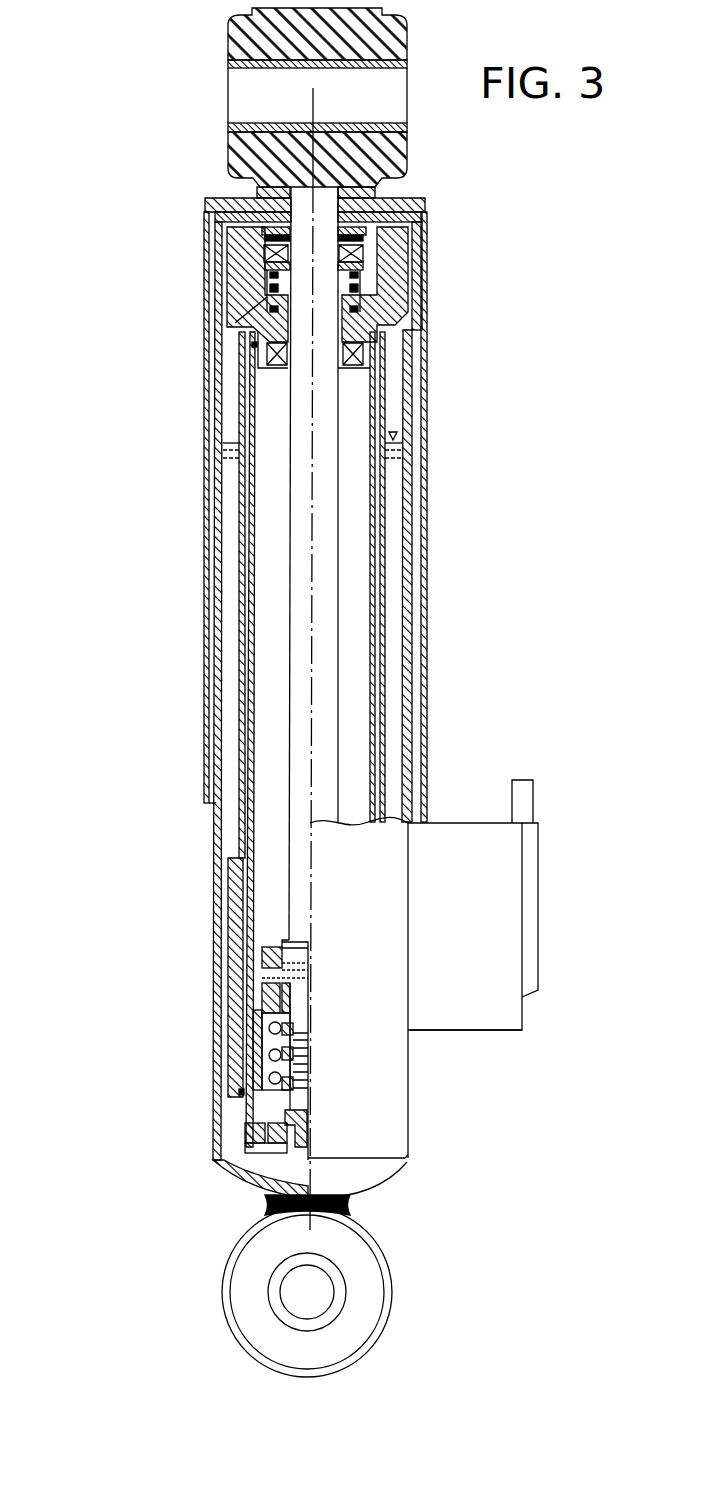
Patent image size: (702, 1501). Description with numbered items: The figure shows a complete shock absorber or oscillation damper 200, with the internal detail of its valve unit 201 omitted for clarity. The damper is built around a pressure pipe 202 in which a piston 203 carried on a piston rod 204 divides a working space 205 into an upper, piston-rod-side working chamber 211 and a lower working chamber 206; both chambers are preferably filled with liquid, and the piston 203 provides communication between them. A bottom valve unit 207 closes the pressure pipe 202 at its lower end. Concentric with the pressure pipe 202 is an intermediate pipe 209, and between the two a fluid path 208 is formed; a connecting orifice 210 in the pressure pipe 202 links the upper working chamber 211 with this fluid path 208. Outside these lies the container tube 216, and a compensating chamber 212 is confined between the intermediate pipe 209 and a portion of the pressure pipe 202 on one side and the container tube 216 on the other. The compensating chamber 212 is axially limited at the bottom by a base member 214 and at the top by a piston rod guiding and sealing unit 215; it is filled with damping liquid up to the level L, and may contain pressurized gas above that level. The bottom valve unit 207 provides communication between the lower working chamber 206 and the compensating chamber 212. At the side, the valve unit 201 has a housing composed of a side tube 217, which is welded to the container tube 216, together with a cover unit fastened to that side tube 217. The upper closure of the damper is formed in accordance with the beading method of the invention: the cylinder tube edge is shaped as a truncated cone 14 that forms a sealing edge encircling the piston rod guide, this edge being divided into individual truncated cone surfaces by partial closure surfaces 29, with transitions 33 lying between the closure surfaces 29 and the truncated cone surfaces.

The oscillation damper 200 is at (168, 680).
The truncated cone 14 is at (427, 212).
The transitions 33 is at (395, 198).
The partial closure surfaces 29 is at (218, 238).
The piston rod guiding and sealing unit 215 is at (390, 308).
The connecting orifice 210 is at (376, 415).
The level L is at (233, 443).
The working space 205 is at (268, 478).
The piston rod 204 is at (330, 502).
The container tube 216 is at (407, 540).
The upper working chamber 211 is at (268, 585).
The compensating chamber 212 is at (390, 583).
The pressure pipe 202 is at (395, 620).
The fluid path 208 is at (385, 658).
The intermediate pipe 209 is at (385, 708).
The valve unit 201 is at (474, 815).
The side tube 217 is at (482, 1032).
The piston 203 is at (257, 1035).
The lower working chamber 206 is at (258, 1107).
The bottom valve unit 207 is at (250, 1143).
The base member 214 is at (225, 1162).